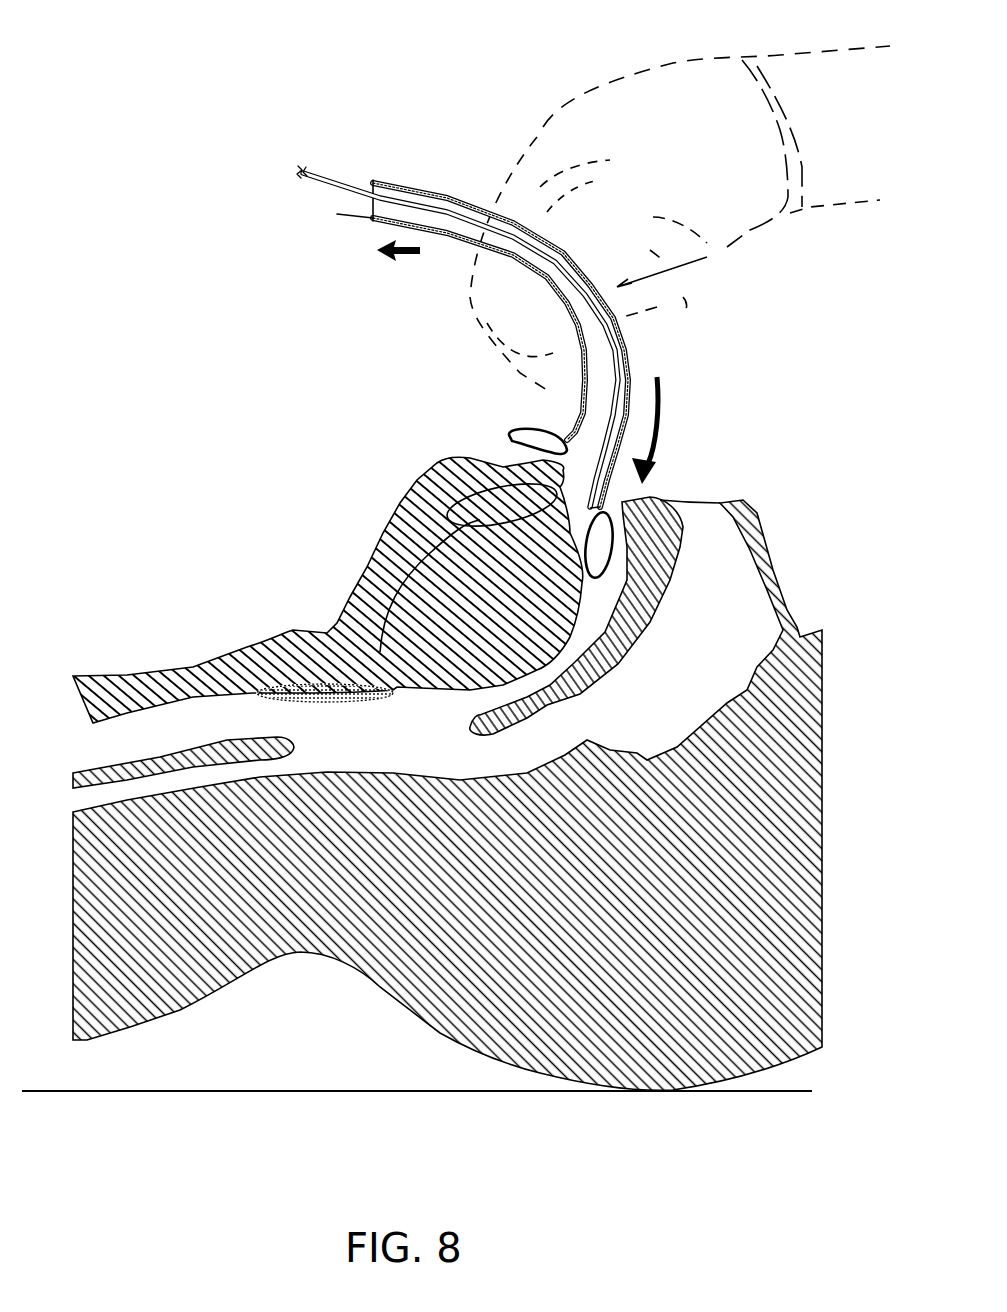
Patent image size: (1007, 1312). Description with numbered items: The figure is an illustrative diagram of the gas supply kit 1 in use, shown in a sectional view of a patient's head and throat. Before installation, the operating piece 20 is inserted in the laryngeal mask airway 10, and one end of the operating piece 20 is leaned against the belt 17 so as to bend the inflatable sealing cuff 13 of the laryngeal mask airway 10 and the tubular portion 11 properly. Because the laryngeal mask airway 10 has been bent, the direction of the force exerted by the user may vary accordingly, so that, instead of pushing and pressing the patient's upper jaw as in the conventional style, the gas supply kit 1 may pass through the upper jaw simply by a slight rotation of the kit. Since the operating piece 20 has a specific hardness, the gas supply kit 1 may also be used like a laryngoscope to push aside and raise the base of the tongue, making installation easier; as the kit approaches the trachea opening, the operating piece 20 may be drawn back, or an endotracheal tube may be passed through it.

The gas supply kit 1 is at (345, 118).
The laryngeal mask airway 10 is at (460, 203).
The operating piece 20 is at (300, 180).
The tubular portion 11 is at (600, 357).
The belt 17 is at (590, 508).
The inflatable sealing cuff 13 is at (598, 553).